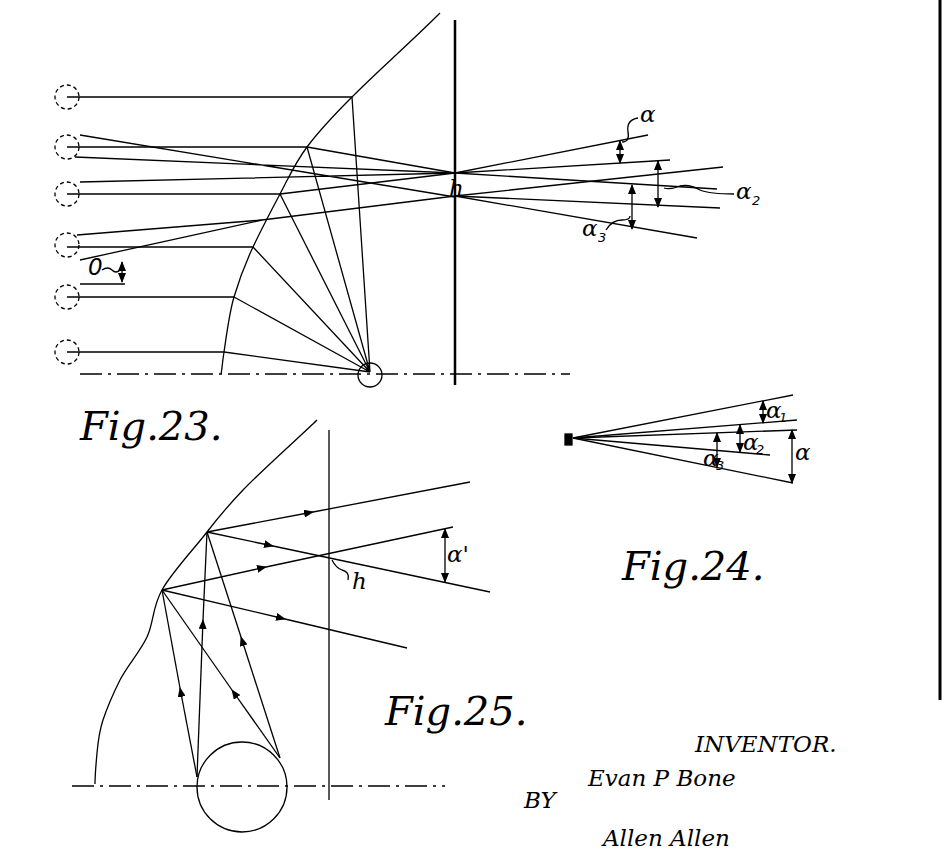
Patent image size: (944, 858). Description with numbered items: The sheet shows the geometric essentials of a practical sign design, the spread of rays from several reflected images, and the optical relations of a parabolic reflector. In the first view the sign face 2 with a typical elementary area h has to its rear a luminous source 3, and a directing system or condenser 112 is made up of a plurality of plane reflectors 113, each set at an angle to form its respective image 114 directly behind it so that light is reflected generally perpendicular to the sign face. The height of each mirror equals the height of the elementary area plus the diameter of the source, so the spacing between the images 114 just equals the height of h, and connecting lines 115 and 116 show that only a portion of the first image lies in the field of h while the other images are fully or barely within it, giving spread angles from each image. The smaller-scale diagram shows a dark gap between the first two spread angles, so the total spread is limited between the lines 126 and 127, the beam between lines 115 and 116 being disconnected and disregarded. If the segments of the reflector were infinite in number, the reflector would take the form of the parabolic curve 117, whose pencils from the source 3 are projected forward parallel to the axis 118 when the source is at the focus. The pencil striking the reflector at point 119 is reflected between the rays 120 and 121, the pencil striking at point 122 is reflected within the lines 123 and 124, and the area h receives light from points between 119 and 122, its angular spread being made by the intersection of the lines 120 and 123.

In FIG. 23, the sign face 2 is at (455, 140).
In FIG. 24, the sign face 2 is at (572, 445).
In FIG. 25, the sign face 2 is at (331, 478).
In FIG. 23, the luminous source 3 is at (389, 358).
In FIG. 25, the luminous source 3 is at (196, 777).
In FIG. 23, the directing system or condenser 112 is at (394, 58).
In FIG. 24, the directing system or condenser 112 is at (566, 440).
In FIG. 23, the plane reflectors 113 is at (226, 266).
In FIG. 23, the images 114 is at (78, 96).
In FIG. 23, the connecting line 115 is at (172, 222).
In FIG. 24, the connecting line 115 is at (706, 426).
In FIG. 23, the connecting line 116 is at (148, 243).
In FIG. 24, the connecting line 116 is at (730, 404).
In FIG. 25, the parabolic reflector 117 is at (244, 489).
In FIG. 25, the axis of the reflector 118 is at (374, 786).
In FIG. 25, the point on the reflector 119 is at (160, 590).
In FIG. 25, the ray 120 is at (452, 528).
In FIG. 25, the ray 121 is at (376, 642).
In FIG. 25, the point on the reflector 122 is at (205, 532).
In FIG. 25, the line 123 is at (452, 583).
In FIG. 25, the line 124 is at (392, 500).
In FIG. 24, the line 126 is at (694, 432).
In FIG. 24, the line 127 is at (702, 466).